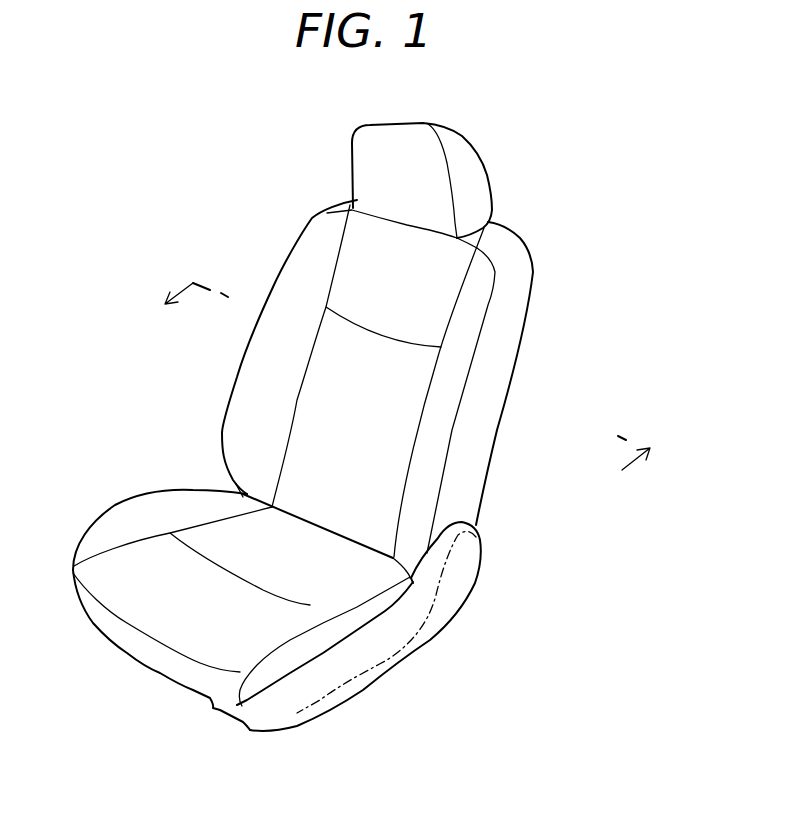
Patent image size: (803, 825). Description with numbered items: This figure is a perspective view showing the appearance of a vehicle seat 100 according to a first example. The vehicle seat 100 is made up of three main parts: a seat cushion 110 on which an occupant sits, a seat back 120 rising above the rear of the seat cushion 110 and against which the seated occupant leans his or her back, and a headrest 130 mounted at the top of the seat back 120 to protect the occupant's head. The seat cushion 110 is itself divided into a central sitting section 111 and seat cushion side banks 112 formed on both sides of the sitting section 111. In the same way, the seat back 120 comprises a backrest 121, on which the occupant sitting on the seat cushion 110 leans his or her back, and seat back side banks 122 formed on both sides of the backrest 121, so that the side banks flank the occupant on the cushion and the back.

The vehicle seat 100 is at (258, 181).
The seat cushion 110 is at (320, 631).
The sitting section 111 is at (320, 572).
The seat cushion side banks 112 is at (306, 646).
The seat back 120 is at (449, 389).
The backrest 121 is at (378, 428).
The seat back side banks 122 is at (452, 377).
The headrest 130 is at (470, 183).